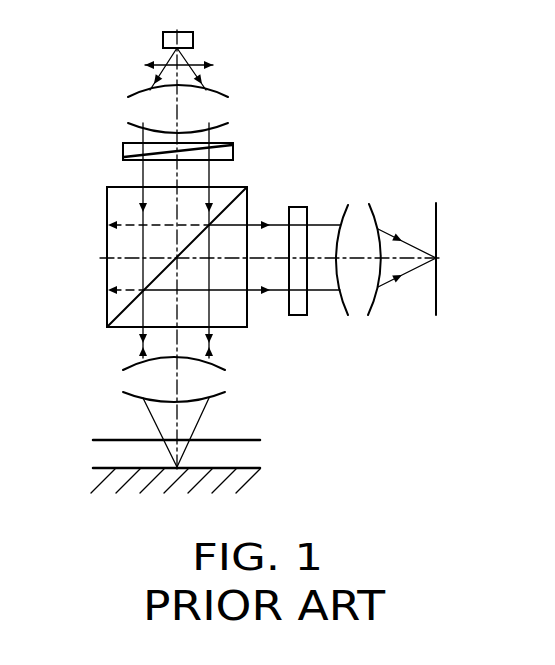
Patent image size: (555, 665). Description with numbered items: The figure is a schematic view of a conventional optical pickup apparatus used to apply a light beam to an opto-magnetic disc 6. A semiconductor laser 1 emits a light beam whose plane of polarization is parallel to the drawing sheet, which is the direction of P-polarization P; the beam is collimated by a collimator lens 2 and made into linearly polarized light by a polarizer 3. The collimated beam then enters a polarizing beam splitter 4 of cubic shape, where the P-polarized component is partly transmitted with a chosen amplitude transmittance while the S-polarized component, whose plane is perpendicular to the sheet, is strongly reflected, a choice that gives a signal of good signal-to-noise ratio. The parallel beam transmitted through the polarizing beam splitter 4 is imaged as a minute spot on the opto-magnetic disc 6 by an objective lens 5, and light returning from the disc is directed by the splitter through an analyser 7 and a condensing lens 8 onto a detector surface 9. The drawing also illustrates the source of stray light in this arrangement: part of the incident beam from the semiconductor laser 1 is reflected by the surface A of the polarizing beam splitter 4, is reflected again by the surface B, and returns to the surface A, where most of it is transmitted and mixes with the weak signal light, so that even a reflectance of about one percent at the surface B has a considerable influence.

The semiconductor laser 1 is at (193, 35).
The P-polarization P is at (200, 62).
The collimator lens 2 is at (215, 110).
The polarizer 3 is at (232, 150).
The polarizing beam splitter 4 is at (236, 212).
The surface B is at (107, 207).
The surface A is at (122, 298).
The analyser 7 is at (305, 208).
The condensing lens 8 is at (357, 215).
The detector surface 9 is at (437, 210).
The objective lens 5 is at (218, 382).
The opto-magnetic disc 6 is at (243, 457).